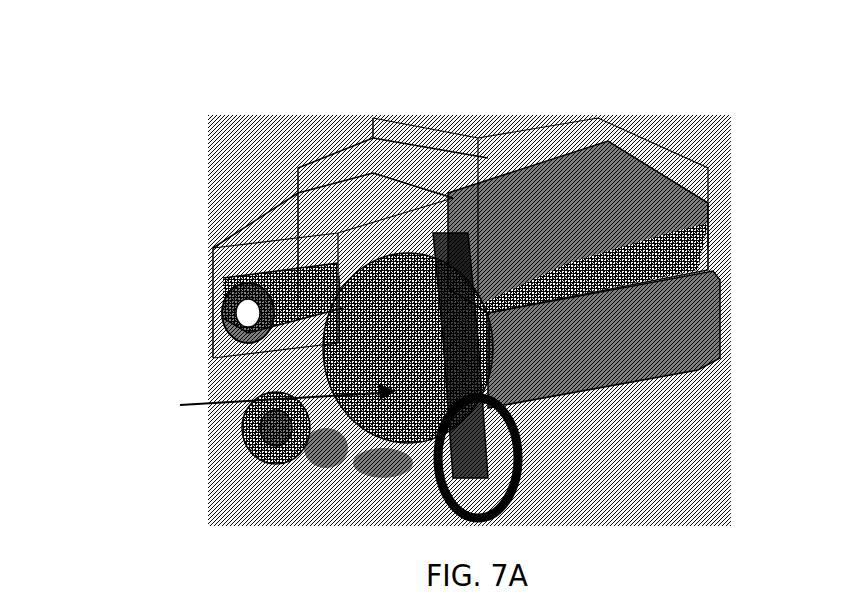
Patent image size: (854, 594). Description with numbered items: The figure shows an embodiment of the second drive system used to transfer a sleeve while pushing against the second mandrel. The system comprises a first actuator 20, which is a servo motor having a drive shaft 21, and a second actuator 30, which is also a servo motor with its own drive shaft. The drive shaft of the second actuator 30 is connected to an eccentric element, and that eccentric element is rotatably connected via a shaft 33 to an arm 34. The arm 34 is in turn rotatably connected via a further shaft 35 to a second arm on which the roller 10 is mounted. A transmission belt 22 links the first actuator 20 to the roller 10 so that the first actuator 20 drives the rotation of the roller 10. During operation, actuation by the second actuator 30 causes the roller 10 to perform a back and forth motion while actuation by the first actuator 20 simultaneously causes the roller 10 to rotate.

The roller 10 is at (520, 472).
The first actuator 20 is at (624, 129).
The drive shaft 21 is at (240, 307).
The transmission belt 22 is at (450, 330).
The second actuator 30 is at (606, 396).
The shaft 33 is at (253, 422).
The arm 34 is at (305, 445).
The shaft 35 is at (350, 463).